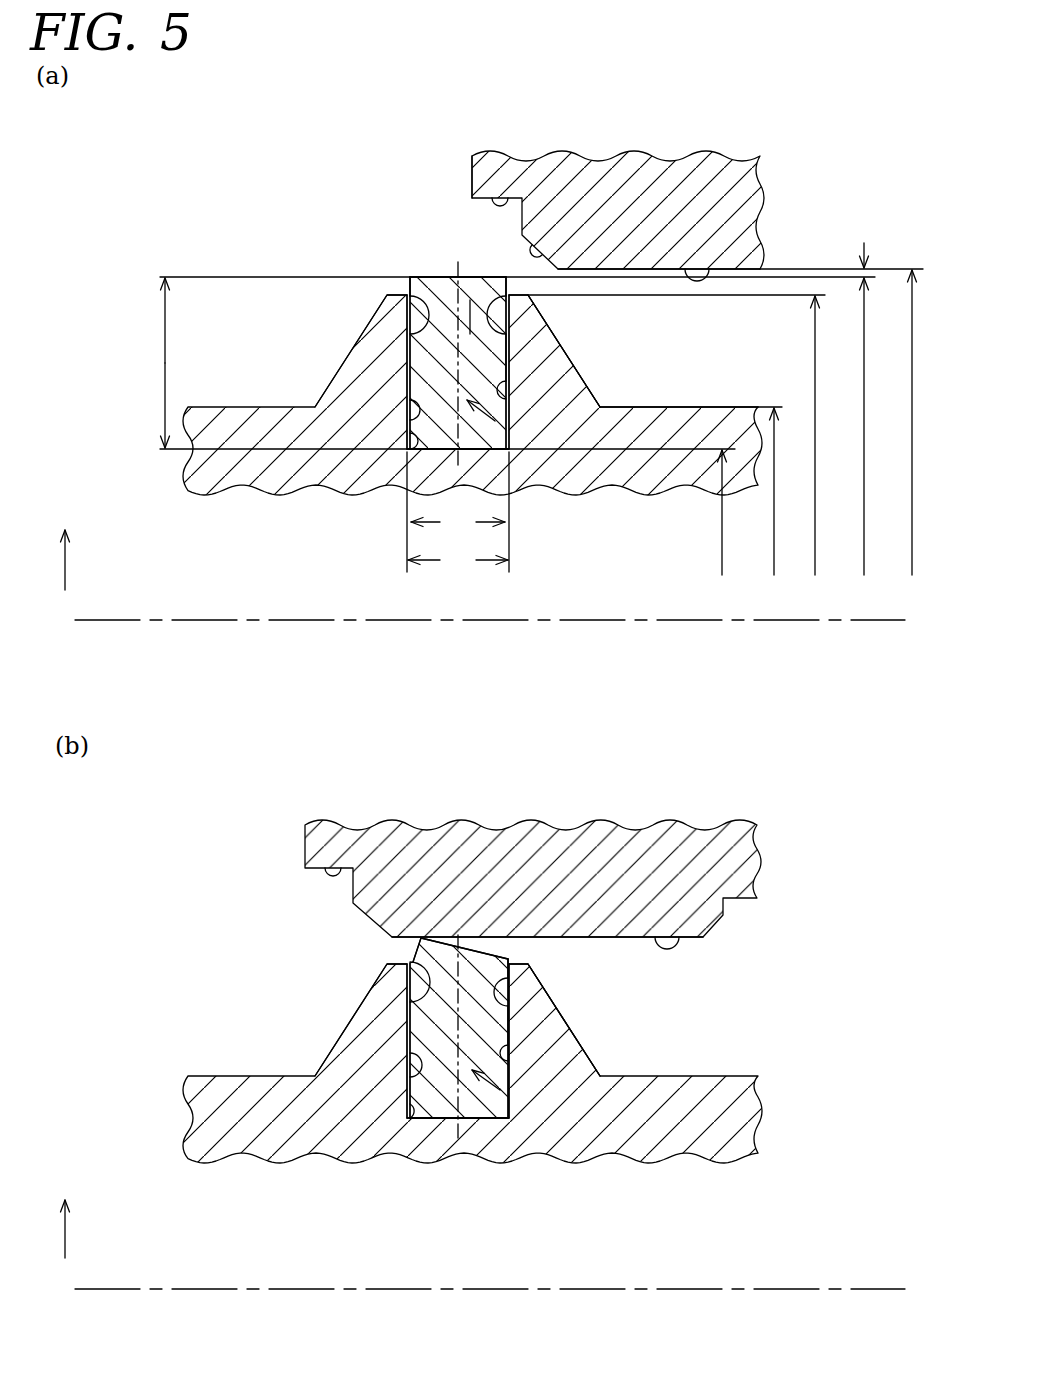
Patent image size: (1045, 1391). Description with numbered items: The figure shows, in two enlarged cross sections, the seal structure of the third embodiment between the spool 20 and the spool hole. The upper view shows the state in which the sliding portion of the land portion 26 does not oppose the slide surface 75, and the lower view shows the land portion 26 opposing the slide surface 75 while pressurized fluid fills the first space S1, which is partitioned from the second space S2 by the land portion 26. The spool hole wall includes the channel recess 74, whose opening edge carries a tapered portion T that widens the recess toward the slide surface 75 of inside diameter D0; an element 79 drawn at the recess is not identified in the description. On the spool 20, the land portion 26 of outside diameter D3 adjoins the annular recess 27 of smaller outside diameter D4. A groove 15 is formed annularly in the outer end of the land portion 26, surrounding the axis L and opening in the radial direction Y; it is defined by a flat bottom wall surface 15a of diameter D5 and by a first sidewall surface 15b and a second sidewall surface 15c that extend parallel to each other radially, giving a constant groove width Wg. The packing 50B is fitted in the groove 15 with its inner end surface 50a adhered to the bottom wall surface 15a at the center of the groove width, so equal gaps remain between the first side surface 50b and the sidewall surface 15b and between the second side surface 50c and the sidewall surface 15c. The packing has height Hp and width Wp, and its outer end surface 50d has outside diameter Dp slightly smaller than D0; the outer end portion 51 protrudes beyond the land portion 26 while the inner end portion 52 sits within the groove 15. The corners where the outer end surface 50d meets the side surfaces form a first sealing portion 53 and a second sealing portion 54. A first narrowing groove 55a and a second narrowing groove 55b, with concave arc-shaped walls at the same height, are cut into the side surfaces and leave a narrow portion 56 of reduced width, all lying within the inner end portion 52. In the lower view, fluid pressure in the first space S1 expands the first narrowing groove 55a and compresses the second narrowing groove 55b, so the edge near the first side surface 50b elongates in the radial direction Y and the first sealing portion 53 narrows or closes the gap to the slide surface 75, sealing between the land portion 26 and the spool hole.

The channel recess 74 is at (508, 197).
The slide surface 75 is at (712, 262).
The protruding portion of cover member 79 is at (472, 172).
The tapered portion T is at (583, 207).
The spool 20 is at (282, 470).
The groove 15 is at (404, 368).
The bottom wall surface 15a is at (400, 450).
The first sidewall surface 15b is at (350, 390).
The second sidewall surface 15c is at (507, 397).
The land portion 26 is at (540, 357).
The annular recess 27 is at (742, 406).
The packing 50B is at (420, 320).
The inner end surface 50a is at (492, 452).
The first side surface 50b is at (405, 345).
The second side surface 50c is at (510, 414).
The outer end surface 50d is at (405, 268).
The outer end portion 51 is at (443, 282).
The inner end portion 52 is at (513, 402).
The first sealing portion 53 is at (407, 275).
The second sealing portion 54 is at (523, 232).
The first narrowing groove 55a is at (427, 307).
The second narrowing groove 55b is at (500, 318).
The narrow portion 56 is at (470, 313).
The height of the packing Hp is at (501, 363).
The width of the packing Wp is at (458, 522).
The groove width Wg is at (458, 513).
The inside diameter of the slide surfaces D0 is at (856, 422).
The outside diameter of the packing Dp is at (882, 426).
The outside diameter of the land portions D3 is at (691, 435).
The outside diameter of the annular recesses D4 is at (784, 491).
The diameter of the bottom wall surface D5 is at (740, 512).
The radial direction Y is at (66, 874).
The axis L is at (503, 956).
The first space S1 is at (152, 997).
The second space S2 is at (792, 997).